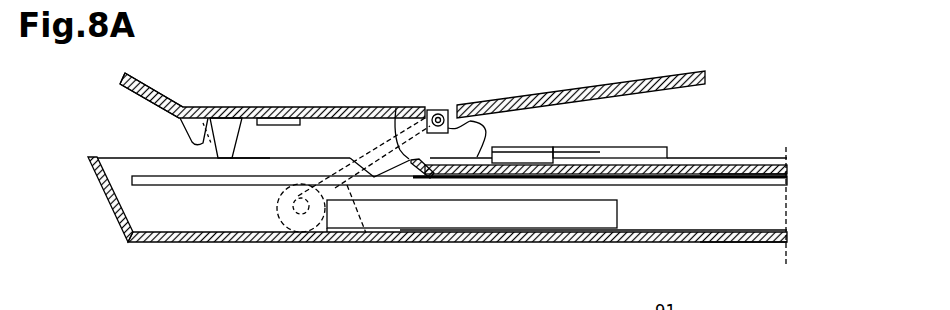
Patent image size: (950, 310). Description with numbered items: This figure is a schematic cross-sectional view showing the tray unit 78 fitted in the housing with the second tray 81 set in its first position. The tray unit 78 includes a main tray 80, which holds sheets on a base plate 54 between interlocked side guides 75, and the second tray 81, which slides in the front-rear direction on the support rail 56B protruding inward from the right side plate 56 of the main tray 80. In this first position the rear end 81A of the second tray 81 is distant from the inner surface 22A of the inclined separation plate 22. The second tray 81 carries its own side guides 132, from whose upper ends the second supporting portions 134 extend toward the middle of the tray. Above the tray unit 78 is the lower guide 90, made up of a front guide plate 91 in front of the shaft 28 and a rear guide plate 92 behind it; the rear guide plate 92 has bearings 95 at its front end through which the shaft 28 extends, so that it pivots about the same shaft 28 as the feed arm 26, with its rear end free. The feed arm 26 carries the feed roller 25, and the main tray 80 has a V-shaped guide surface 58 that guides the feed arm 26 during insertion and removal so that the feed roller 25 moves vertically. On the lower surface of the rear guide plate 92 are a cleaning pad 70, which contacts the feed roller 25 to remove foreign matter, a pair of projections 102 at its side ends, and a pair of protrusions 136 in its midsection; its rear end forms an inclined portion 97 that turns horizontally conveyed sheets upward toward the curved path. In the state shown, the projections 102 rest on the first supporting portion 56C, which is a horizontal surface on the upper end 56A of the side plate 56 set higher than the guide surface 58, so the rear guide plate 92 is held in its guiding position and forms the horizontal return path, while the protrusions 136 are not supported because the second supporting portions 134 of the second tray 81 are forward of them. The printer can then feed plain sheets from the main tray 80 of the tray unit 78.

The inclined separation plate 22 is at (118, 219).
The inner surface of inclined separation plate 22A is at (115, 191).
The feed roller 25 is at (325, 246).
The feed arm 26 is at (364, 235).
The shaft 28 is at (437, 110).
The base plate 54 is at (561, 243).
The right side plate 56 is at (733, 165).
The upper end of right side plate 56A is at (495, 102).
The support rail 56B is at (722, 186).
The first supporting portion 56C is at (248, 160).
The guide surface 58 is at (361, 150).
The cleaning pad 70 is at (290, 126).
The side guide 75 is at (618, 209).
The tray unit 78 is at (126, 270).
The main tray 80 is at (700, 243).
The second tray 81 is at (767, 166).
The rear end of second tray 81A is at (396, 108).
The lower guide 90 is at (376, 74).
The front guide plate 91 is at (640, 83).
The rear guide plate 92 is at (227, 107).
The bearing 95 is at (471, 117).
The inclined portion 97 is at (152, 87).
The projection 102 is at (212, 159).
The side guide of second tray 132 is at (640, 147).
The second supporting portion 134 is at (534, 148).
The protrusion 136 is at (192, 145).